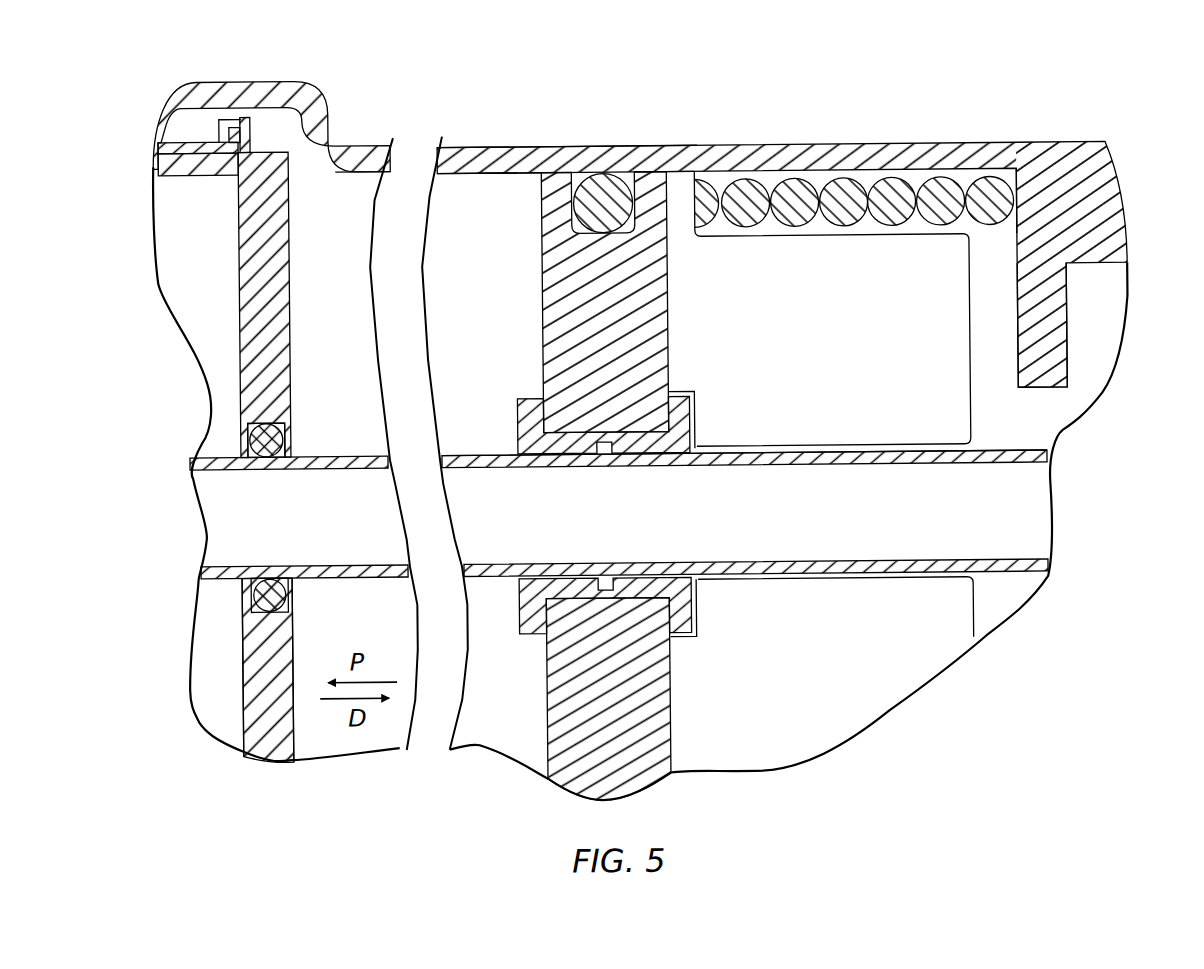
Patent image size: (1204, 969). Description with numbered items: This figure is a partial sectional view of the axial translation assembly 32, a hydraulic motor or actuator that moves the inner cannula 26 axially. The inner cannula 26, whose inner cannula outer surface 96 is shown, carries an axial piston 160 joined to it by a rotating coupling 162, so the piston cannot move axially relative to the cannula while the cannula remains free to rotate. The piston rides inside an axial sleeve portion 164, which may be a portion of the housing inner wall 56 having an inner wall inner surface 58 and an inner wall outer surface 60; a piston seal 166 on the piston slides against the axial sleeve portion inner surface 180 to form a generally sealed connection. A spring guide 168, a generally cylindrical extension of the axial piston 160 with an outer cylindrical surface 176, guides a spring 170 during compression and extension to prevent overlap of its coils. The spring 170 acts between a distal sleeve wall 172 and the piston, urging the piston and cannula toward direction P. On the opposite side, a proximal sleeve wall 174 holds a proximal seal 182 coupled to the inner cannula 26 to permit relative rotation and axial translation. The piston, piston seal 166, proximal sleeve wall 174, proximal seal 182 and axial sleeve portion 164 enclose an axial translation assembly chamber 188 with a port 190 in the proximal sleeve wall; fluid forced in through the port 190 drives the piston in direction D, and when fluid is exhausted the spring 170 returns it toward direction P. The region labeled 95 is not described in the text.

The inner cannula 26 is at (492, 565).
The axial translation assembly 32 is at (352, 98).
The inner wall 56 is at (521, 158).
The inner wall inner surface 58 is at (456, 177).
The inner wall outer surface 60 is at (480, 141).
The shaft passage 95 is at (780, 527).
The inner cannula outer surface 96 is at (478, 453).
The axial piston 160 is at (648, 288).
The rotating coupling 162 is at (680, 423).
The axial sleeve portion 164 is at (666, 157).
The piston seal 166 is at (601, 195).
The spring guide 168 is at (682, 192).
The spring 170 is at (893, 198).
The distal sleeve wall 172 is at (1044, 330).
The proximal sleeve wall 174 is at (270, 288).
The outer cylindrical surface 176 is at (832, 229).
The axial sleeve portion inner surface 180 is at (343, 177).
The proximal seal 182 is at (266, 453).
The axial translation assembly chamber 188 is at (493, 326).
The port 190 is at (298, 156).